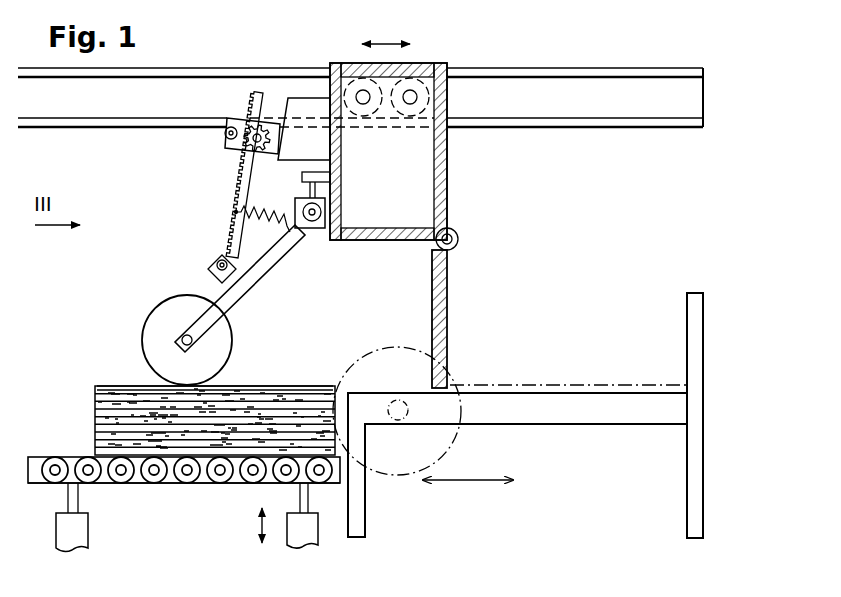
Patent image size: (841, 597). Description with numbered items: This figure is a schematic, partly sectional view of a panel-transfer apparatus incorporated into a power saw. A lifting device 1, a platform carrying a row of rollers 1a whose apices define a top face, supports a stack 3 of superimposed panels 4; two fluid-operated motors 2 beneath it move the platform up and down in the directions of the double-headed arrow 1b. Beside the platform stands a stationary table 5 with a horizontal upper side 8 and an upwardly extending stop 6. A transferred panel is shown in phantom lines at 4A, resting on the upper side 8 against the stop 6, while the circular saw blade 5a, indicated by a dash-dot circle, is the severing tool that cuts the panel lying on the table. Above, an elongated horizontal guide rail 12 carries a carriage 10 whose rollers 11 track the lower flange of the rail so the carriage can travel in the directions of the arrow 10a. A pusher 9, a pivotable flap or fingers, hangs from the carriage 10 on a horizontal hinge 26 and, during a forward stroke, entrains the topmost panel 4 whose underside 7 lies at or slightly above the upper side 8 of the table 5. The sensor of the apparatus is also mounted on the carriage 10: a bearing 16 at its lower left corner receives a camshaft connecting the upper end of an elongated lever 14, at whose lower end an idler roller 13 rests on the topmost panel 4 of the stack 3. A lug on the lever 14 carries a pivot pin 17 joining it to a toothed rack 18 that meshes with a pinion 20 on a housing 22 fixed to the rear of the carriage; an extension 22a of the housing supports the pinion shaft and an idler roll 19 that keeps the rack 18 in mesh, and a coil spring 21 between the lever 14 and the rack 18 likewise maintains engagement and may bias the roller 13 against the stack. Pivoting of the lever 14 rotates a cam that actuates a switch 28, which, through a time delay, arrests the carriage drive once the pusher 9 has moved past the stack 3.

The lifting device 1 is at (175, 484).
The rollers 1a is at (98, 484).
The double-headed arrow 1b is at (256, 526).
The fluid-operated motors 2 is at (88, 529).
The stack 3 is at (92, 408).
The panel 4 is at (301, 387).
The panel position on table 4A is at (503, 385).
The table 5 is at (557, 425).
The saw blade 5a is at (366, 347).
The stop 6 is at (688, 348).
The underside of topmost panel 7 is at (278, 387).
The upper side 8 is at (573, 392).
The pusher 9 is at (447, 345).
The carriage 10 is at (447, 183).
The double-headed arrow 10a is at (388, 42).
The rollers 11 is at (420, 88).
The guide rail 12 is at (590, 90).
The rotary element 13 is at (168, 312).
The lever 14 is at (242, 298).
The bearing 16 is at (325, 230).
The pivot pin 17 is at (218, 260).
The toothed rack 18 is at (238, 198).
The idler roll 19 is at (228, 136).
The pinion 20 is at (250, 148).
The coil spring 21 is at (268, 214).
The housing 22 is at (300, 103).
The extension 22a is at (232, 123).
The hinges 26 is at (459, 241).
The switch 28 is at (329, 177).